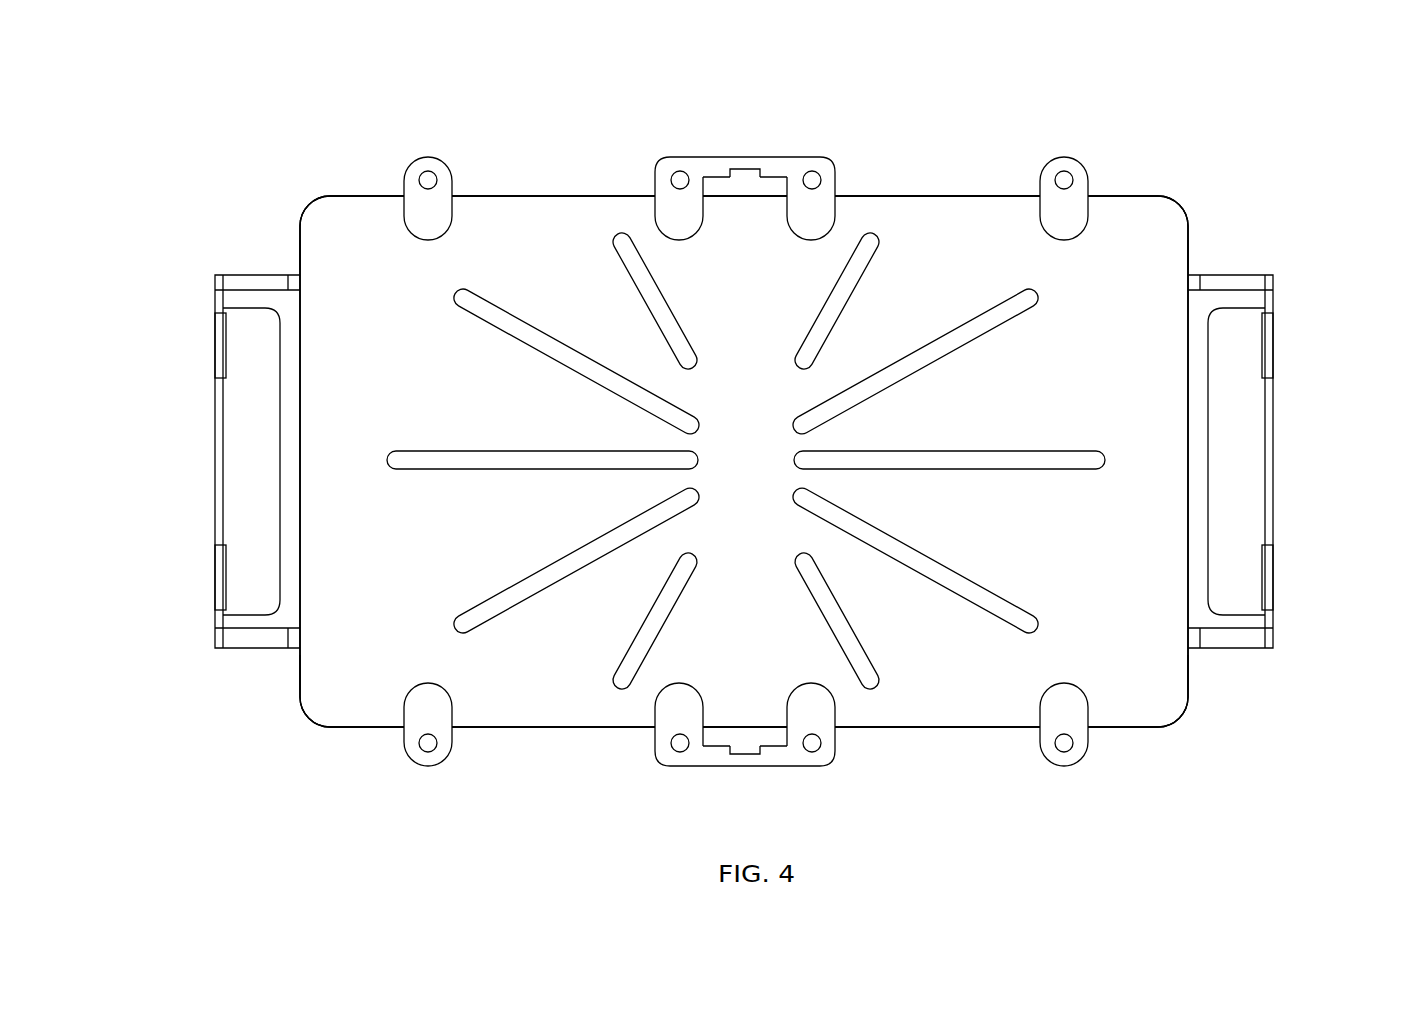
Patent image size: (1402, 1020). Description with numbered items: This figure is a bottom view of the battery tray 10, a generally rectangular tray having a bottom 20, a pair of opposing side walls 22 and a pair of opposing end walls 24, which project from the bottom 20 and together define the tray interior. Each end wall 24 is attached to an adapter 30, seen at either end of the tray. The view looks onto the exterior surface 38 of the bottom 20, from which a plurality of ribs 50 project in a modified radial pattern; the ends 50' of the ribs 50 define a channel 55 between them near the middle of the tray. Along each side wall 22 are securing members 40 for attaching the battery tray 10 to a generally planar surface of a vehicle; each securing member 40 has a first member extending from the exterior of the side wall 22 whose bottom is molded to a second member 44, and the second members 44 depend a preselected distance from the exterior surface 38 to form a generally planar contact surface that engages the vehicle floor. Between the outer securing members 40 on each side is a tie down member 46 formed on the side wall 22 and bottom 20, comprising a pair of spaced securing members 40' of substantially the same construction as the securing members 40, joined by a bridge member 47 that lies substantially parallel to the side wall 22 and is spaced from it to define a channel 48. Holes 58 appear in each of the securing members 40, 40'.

The battery tray 10 is at (287, 135).
The bottom 20 is at (1145, 208).
The side walls 22 is at (932, 196).
The end walls 24 is at (1192, 236).
The adapter 30 is at (170, 417).
The exterior surface 38 is at (1061, 392).
The securing members 40 is at (748, 467).
The securing members 40' is at (746, 462).
The second member 44 is at (414, 217).
The tie down members 46 is at (780, 128).
The bridge member 47 is at (700, 158).
The channel 48 is at (722, 185).
The ribs 50 is at (746, 458).
The ends 50' is at (746, 461).
The channel 55 is at (750, 420).
The hole 58 is at (428, 180).